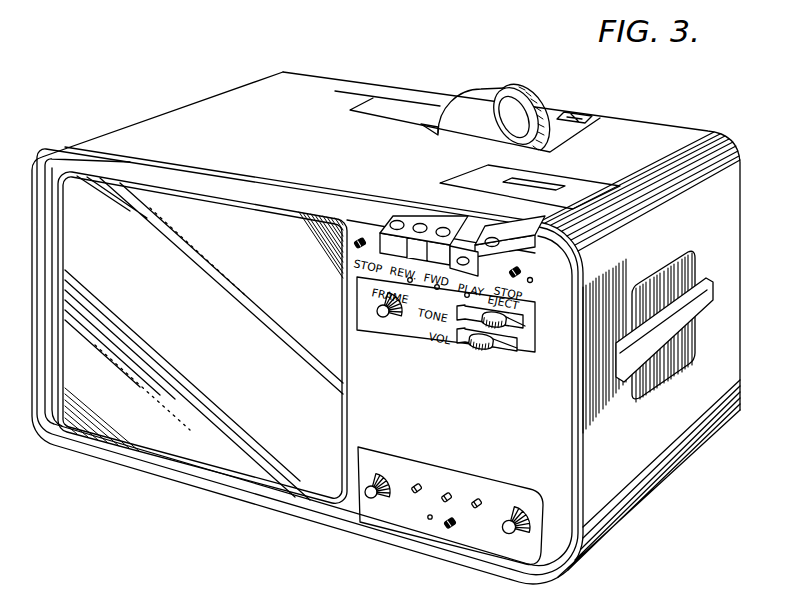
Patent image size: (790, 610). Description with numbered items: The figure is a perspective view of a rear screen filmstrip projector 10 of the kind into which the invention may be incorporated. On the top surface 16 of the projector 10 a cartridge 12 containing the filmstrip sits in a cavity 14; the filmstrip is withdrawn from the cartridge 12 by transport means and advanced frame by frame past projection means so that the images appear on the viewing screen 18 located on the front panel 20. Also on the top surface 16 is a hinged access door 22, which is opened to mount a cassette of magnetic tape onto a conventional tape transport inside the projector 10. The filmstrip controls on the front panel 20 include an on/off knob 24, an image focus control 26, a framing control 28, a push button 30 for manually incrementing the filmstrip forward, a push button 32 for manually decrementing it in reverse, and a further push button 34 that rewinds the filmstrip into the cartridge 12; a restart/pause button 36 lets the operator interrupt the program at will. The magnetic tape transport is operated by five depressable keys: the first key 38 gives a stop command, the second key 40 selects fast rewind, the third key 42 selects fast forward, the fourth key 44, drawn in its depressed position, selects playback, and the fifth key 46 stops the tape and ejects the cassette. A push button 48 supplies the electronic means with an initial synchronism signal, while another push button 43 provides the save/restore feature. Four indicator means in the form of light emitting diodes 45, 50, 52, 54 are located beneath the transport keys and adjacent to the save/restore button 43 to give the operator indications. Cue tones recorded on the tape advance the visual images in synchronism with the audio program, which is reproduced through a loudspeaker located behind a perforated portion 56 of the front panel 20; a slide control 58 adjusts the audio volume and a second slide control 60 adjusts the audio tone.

The rear screen filmstrip projector 10 is at (655, 117).
The cartridge 12 is at (519, 104).
The cavity 14 is at (592, 117).
The top surface 16 is at (371, 164).
The viewing screen 18 is at (208, 316).
The front panel 20 is at (518, 443).
The hinged access door 22 is at (598, 184).
The on/off knob 24 is at (532, 512).
The image focus control 26 is at (364, 492).
The framing control 28 is at (378, 311).
The push button 30 is at (414, 484).
The push button 32 is at (447, 492).
The push button 34 is at (479, 498).
The restart/pause button 36 is at (449, 528).
The first key 38 is at (397, 220).
The second key 40 is at (419, 223).
The third key 42 is at (453, 228).
The push button 43 is at (521, 271).
The fourth key 44 is at (479, 236).
The light emitting diode 45 is at (533, 282).
The fifth key 46 is at (506, 234).
The push button 48 is at (353, 245).
The light emitting diode 50 is at (407, 281).
The light emitting diode 52 is at (434, 290).
The light emitting diode 54 is at (467, 299).
The perforated portion 56 is at (472, 421).
The slide control 58 is at (482, 330).
The slide control 60 is at (497, 349).